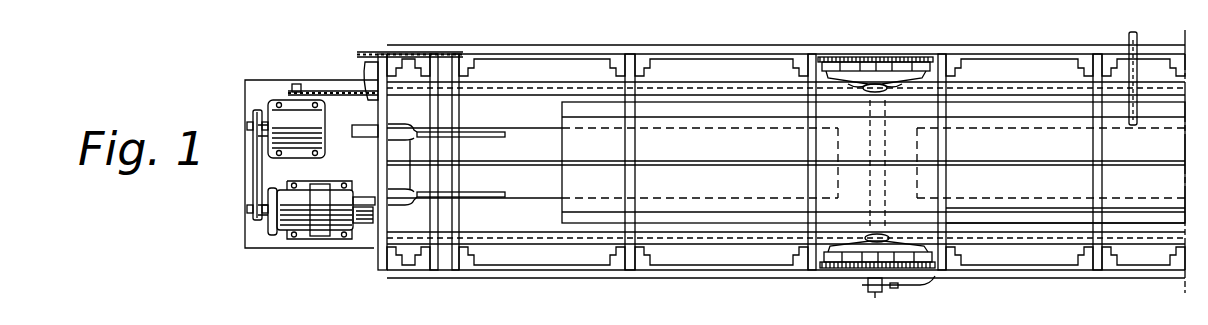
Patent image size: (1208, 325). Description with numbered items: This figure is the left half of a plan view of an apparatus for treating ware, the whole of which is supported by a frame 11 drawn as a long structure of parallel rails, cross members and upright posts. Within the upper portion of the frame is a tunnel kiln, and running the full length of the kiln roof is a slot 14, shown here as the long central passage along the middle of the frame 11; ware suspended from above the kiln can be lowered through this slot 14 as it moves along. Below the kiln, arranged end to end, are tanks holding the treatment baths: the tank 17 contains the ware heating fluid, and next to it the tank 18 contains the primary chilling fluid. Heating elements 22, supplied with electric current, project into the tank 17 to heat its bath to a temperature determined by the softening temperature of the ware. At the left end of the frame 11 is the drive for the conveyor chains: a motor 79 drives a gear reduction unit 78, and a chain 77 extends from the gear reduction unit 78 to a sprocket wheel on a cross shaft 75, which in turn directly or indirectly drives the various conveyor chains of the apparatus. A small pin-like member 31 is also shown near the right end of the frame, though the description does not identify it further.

The frame 11 is at (722, 279).
The slot 14 is at (562, 163).
The tank 17 is at (537, 224).
The tank 18 is at (1037, 204).
The heating elements 22 is at (489, 119).
The stop pin 31 is at (1138, 37).
The cross shaft 75 is at (380, 158).
The chain 77 is at (255, 168).
The gear reduction unit 78 is at (276, 118).
The motor 79 is at (283, 215).